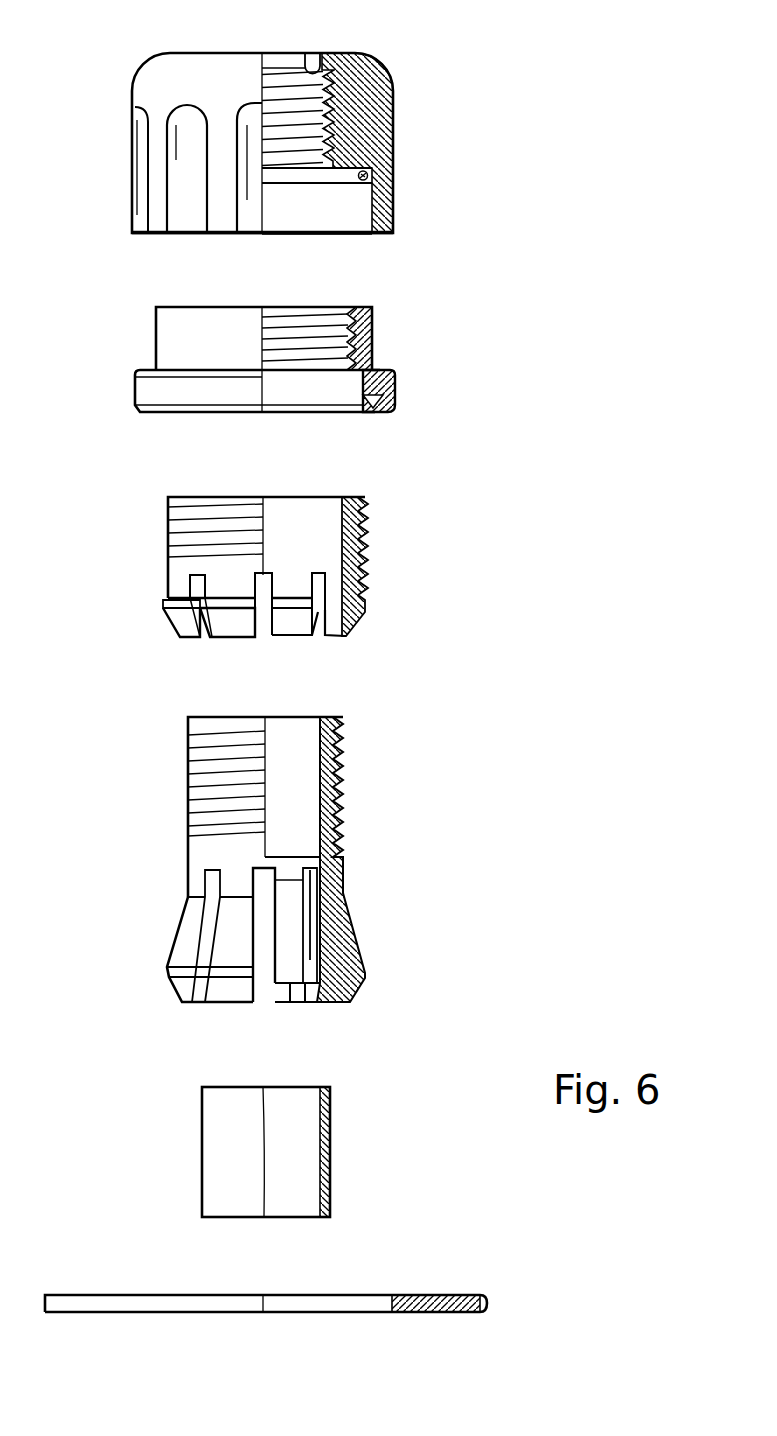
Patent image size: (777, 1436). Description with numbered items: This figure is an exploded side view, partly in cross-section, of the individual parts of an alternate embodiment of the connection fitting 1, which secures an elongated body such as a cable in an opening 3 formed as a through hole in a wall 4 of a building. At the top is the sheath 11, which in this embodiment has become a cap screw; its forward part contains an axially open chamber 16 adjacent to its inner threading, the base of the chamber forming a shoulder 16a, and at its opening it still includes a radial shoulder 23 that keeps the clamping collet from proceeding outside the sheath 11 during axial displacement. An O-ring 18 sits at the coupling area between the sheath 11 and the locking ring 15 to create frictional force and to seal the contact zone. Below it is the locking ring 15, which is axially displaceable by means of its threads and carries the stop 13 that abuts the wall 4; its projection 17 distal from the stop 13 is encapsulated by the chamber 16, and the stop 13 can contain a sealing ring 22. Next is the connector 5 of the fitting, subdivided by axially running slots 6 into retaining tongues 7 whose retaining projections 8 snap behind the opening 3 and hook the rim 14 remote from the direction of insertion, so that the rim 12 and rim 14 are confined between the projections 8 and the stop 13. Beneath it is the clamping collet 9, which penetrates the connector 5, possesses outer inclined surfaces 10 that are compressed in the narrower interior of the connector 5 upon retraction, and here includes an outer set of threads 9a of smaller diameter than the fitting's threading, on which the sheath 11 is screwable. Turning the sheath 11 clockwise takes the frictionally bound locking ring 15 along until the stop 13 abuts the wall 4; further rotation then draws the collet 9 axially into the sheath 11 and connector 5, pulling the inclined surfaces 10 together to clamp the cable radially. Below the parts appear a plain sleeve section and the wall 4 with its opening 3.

The connection fitting 1 is at (105, 485).
The opening 3 is at (277, 1293).
The wall 4 is at (472, 1295).
The connector 5 is at (265, 589).
The slots 6 is at (263, 627).
The retaining tongues 7 is at (225, 585).
The retaining projections 8 is at (362, 595).
The clamping collet 9 is at (283, 859).
The outer set of threads 9a is at (343, 742).
The inclined surfaces 10 is at (353, 920).
The sheath 11 is at (314, 138).
The opening rim 12 is at (407, 1295).
The stop 13 is at (288, 392).
The rim 14 is at (397, 1312).
The locking ring 15 is at (145, 370).
The chamber 16 is at (364, 203).
The shoulder 16a is at (347, 165).
The projection 17 is at (372, 323).
The O-ring 18 is at (372, 174).
The sealing ring 22 is at (375, 412).
The radial shoulder 23 is at (310, 78).